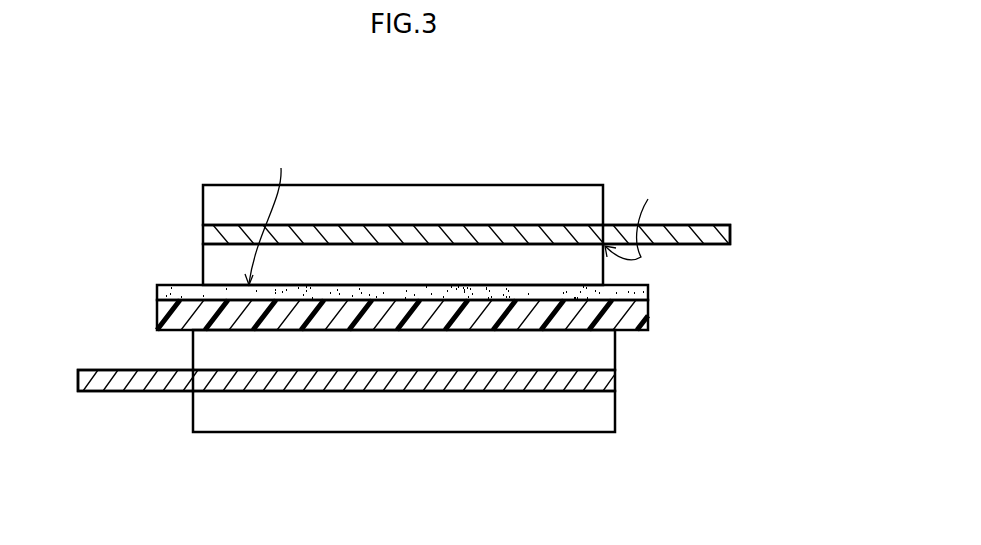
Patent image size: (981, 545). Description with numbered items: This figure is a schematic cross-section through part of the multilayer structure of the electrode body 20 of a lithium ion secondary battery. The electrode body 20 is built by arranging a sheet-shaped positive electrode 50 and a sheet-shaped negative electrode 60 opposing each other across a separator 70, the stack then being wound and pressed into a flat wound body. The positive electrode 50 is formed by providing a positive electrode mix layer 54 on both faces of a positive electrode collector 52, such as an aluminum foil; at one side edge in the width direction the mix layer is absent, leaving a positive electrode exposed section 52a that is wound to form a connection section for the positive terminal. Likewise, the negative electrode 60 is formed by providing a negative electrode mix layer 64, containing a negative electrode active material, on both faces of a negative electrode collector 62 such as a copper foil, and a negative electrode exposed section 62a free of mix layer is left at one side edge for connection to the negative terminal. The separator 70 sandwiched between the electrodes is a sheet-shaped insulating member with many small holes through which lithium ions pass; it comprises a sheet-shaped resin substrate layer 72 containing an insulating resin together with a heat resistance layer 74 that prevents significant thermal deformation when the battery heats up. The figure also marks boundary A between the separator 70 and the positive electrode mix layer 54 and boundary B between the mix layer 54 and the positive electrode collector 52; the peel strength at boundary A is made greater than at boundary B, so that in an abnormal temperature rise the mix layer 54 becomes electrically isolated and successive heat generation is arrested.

The electrode body 20 is at (641, 100).
The positive electrode 50 is at (127, 190).
The positive electrode collector 52 is at (203, 233).
The positive electrode exposed section 52a is at (698, 225).
The positive electrode mix layer 54 is at (203, 203).
The negative electrode 60 is at (687, 343).
The negative electrode collector 62 is at (617, 387).
The negative electrode exposed section 62a is at (118, 368).
The negative electrode mix layer 64 is at (617, 357).
The separator 70 is at (727, 275).
The resin substrate layer 72 is at (650, 318).
The heat resistance layer 74 is at (650, 291).